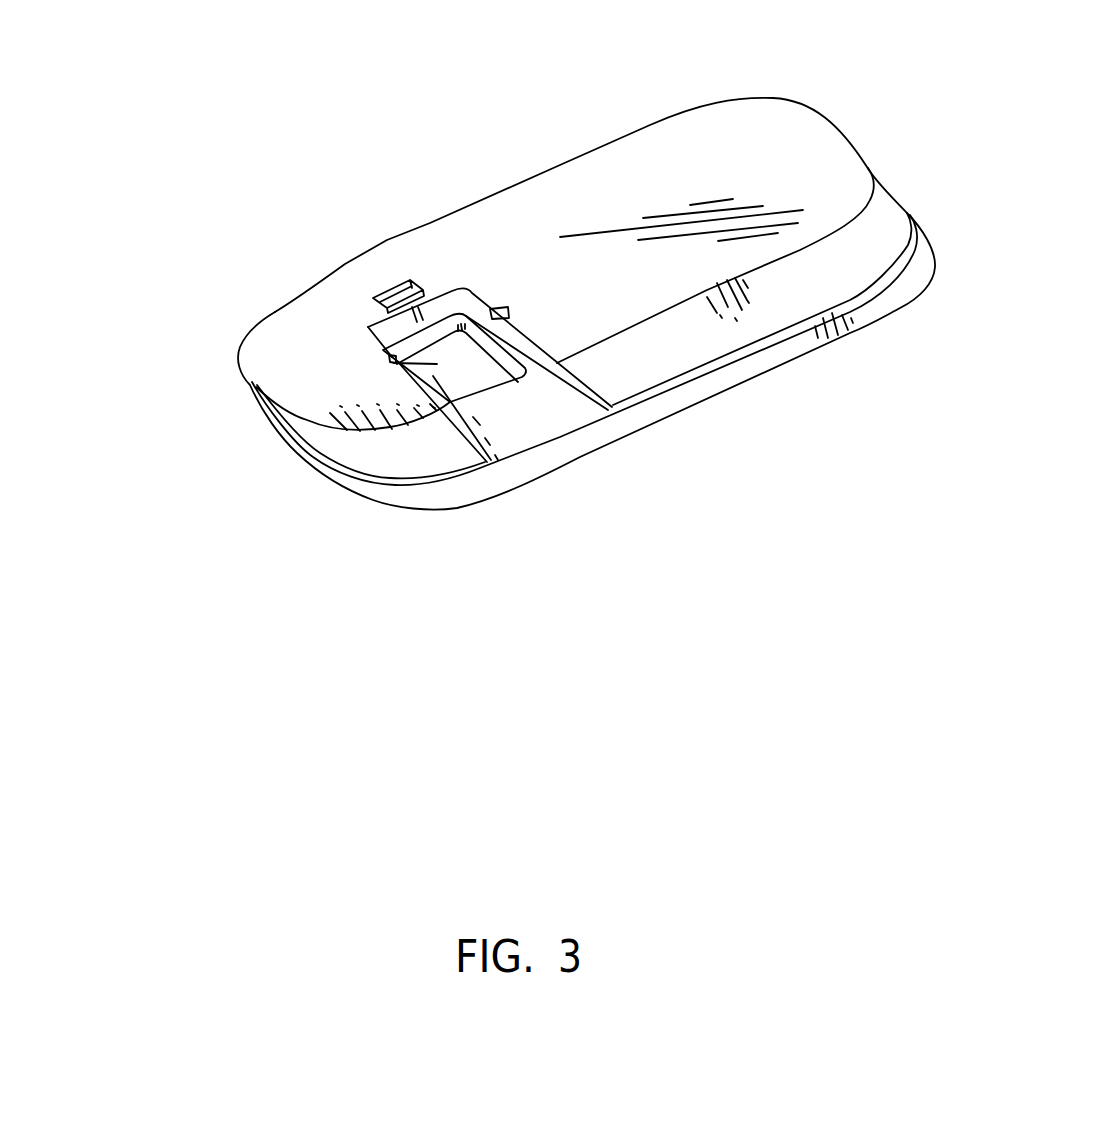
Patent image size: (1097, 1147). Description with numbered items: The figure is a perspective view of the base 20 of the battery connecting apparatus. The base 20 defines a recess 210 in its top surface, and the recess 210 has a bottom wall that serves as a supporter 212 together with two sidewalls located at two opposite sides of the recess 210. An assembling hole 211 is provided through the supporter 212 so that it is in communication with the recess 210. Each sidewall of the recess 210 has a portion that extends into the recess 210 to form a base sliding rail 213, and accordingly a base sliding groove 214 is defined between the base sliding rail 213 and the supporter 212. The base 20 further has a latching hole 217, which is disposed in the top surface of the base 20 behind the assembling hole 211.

The base 20 is at (787, 142).
The recess 210 is at (531, 417).
The assembling hole 211 is at (392, 357).
The supporter 212 is at (524, 351).
The base sliding rail 213 is at (484, 293).
The base sliding groove 214 is at (386, 296).
The latching hole 217 is at (397, 350).